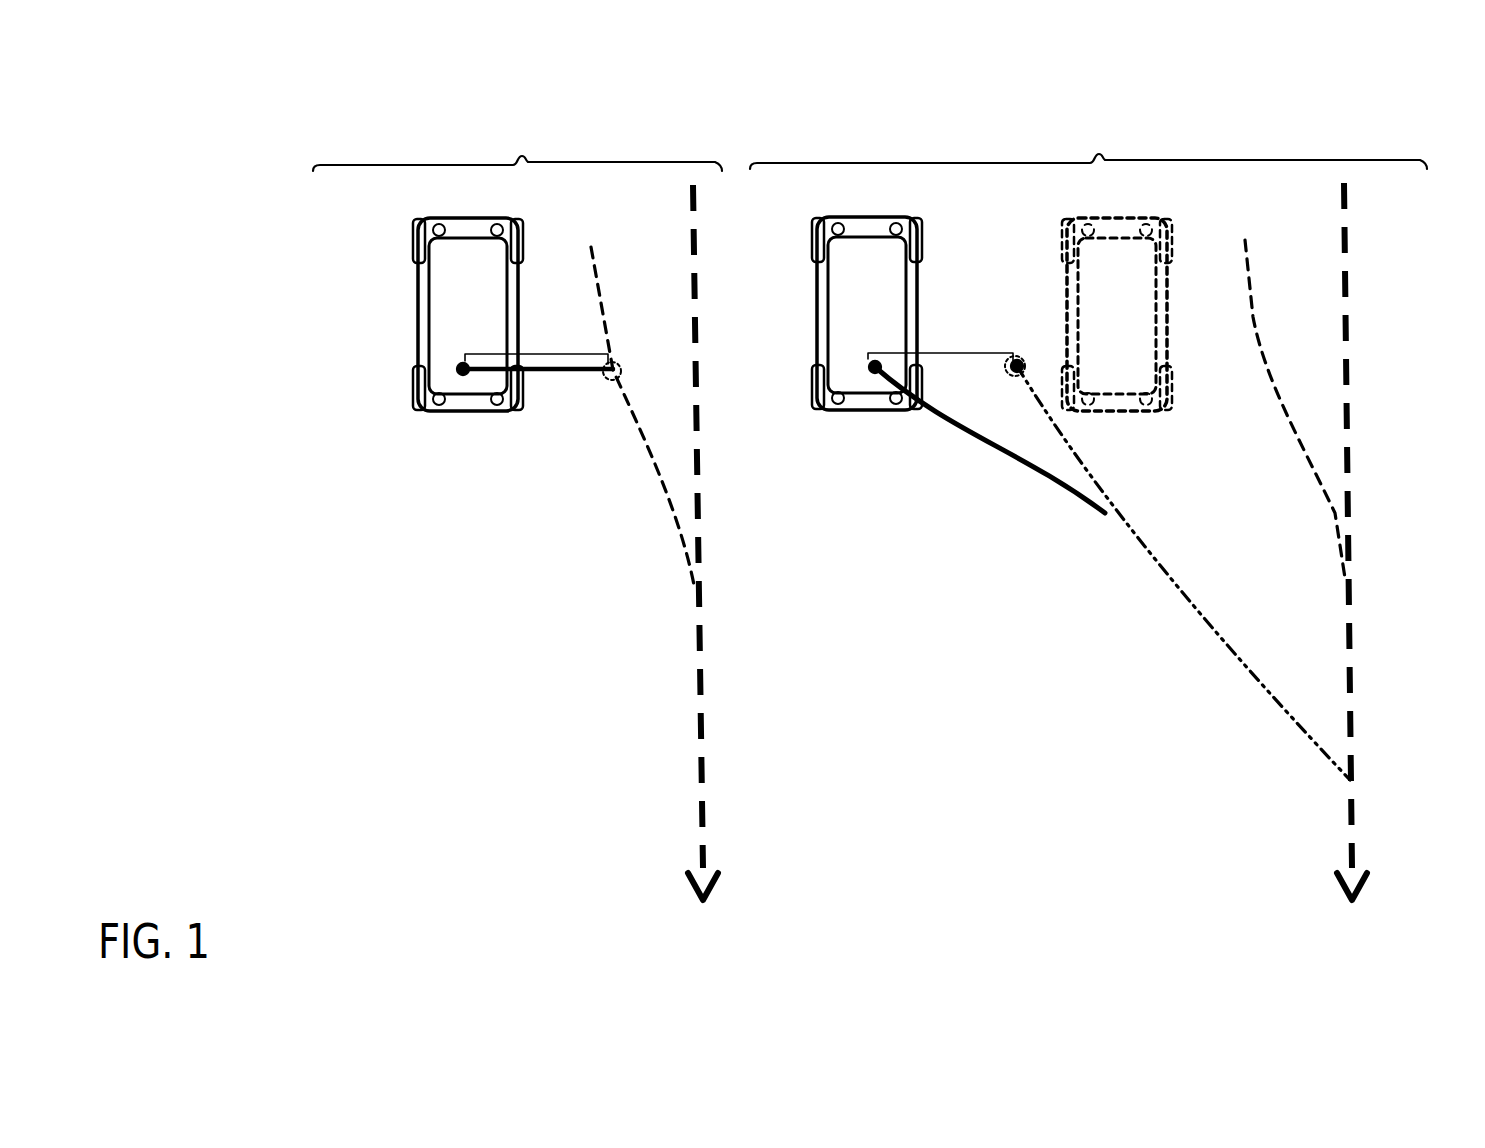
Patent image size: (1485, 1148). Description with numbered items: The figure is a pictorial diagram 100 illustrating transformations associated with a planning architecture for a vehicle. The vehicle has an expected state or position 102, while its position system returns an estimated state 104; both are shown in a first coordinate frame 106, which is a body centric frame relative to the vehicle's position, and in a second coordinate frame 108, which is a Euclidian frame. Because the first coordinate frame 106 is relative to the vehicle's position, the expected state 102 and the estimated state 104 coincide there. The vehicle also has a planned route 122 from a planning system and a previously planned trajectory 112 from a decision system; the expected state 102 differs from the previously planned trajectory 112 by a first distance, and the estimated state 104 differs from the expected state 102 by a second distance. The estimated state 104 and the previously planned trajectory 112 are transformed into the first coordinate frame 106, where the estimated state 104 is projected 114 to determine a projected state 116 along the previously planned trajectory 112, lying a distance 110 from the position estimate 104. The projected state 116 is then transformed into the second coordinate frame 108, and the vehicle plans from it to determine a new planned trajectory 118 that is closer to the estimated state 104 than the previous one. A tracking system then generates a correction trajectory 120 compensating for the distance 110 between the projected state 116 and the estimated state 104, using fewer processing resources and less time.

The pictorial diagram 100 is at (201, 69).
The expected state or position 102 is at (792, 314).
The estimated state or position 104 is at (685, 313).
The first coordinate frame 106 is at (517, 135).
The second coordinate frame 108 is at (1088, 133).
The distance 110 is at (538, 354).
The previously planned trajectory 112 is at (606, 325).
The projection 114 is at (528, 373).
The projected state or position 116 is at (607, 386).
The new planned trajectory 118 is at (1193, 618).
The correction trajectory 120 is at (975, 446).
The planned route 122 is at (704, 766).